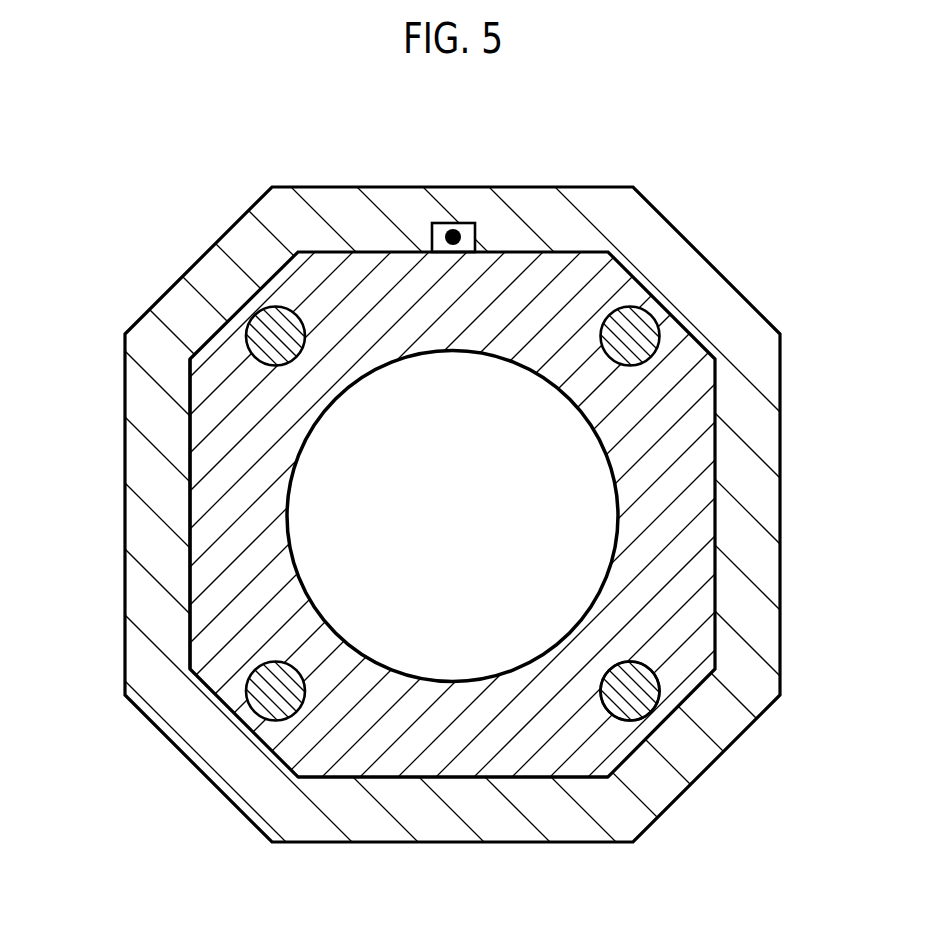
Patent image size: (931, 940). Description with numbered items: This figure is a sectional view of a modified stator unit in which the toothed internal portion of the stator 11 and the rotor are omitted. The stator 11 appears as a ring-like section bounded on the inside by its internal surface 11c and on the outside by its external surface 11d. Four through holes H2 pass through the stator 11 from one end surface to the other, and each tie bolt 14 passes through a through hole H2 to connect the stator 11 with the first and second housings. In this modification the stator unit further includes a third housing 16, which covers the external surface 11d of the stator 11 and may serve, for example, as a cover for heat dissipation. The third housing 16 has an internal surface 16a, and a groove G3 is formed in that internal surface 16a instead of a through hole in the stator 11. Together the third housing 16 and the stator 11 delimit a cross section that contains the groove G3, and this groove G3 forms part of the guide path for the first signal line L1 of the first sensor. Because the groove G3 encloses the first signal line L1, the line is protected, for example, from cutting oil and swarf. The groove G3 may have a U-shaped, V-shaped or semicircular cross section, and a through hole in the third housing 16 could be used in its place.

The stator 11 is at (223, 377).
The internal surface 11c is at (288, 533).
The external surface 11d is at (462, 777).
The tie bolt 14 is at (655, 707).
The third housing 16 is at (150, 403).
The internal surface 16a is at (190, 608).
The groove G3 is at (463, 224).
The through hole H2 is at (643, 668).
The first signal line L1 is at (445, 237).